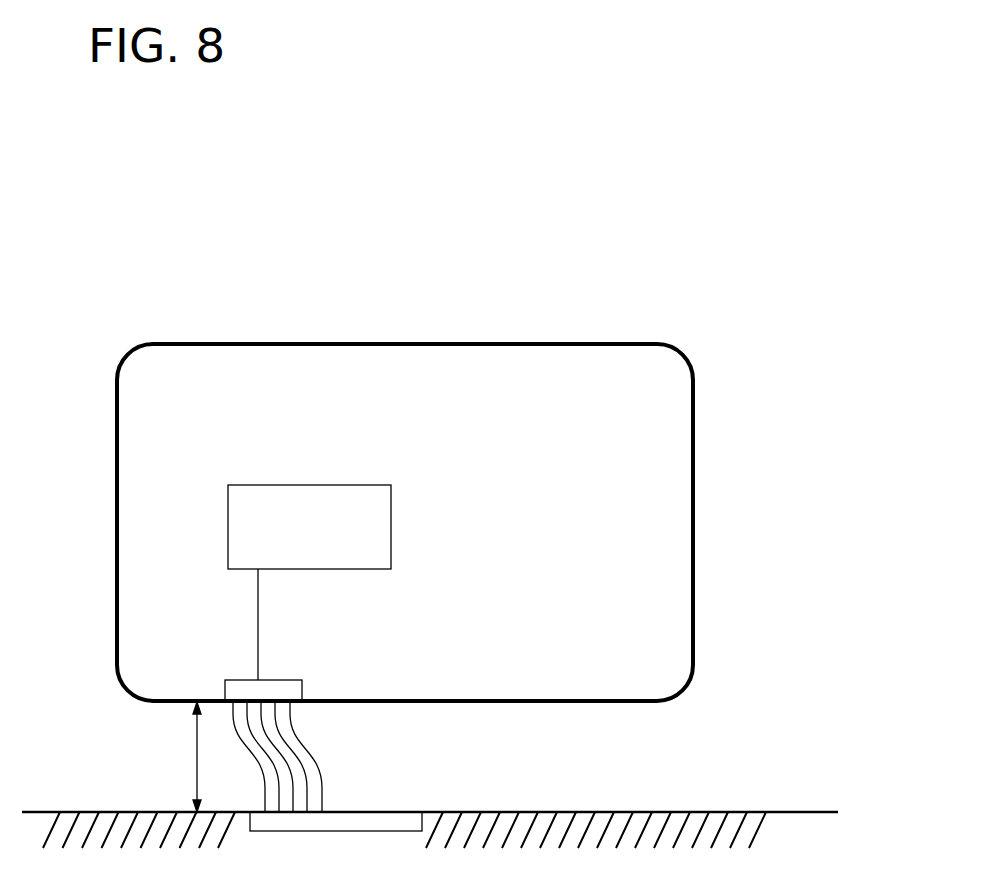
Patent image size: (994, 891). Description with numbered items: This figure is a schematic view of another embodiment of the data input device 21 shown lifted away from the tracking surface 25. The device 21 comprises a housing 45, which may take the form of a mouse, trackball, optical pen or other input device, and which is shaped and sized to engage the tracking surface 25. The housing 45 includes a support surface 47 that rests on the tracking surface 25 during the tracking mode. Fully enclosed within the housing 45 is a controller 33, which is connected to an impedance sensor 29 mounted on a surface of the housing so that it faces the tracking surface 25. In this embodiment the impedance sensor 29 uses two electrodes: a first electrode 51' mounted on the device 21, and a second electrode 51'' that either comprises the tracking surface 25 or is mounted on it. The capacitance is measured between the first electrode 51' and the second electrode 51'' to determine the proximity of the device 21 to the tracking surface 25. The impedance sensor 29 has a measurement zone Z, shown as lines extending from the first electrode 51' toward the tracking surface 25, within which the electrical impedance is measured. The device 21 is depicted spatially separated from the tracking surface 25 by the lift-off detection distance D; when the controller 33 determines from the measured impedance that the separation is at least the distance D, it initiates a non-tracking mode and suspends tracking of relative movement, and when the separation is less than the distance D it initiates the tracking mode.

The data input device 21 is at (722, 455).
The housing 45 is at (694, 590).
The support surface 47 is at (612, 702).
The controller 33 is at (309, 582).
The first electrode 51' is at (230, 677).
The impedance sensor 29 is at (309, 676).
The measurement zone Z is at (332, 748).
The lift-off detection distance D is at (182, 757).
The tracking surface 25 is at (825, 810).
The second electrode 51'' is at (336, 835).